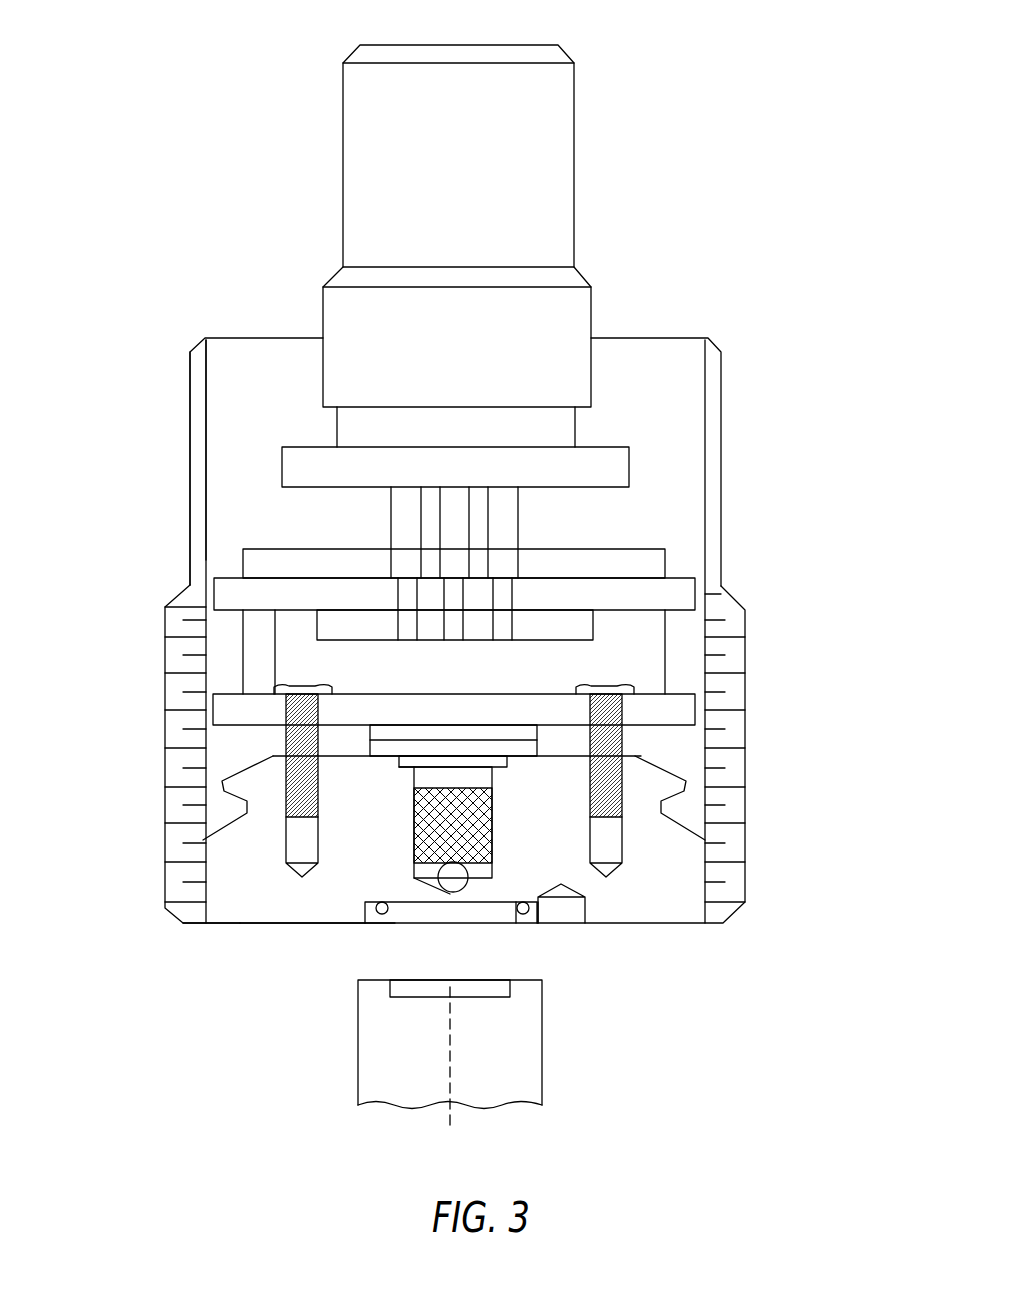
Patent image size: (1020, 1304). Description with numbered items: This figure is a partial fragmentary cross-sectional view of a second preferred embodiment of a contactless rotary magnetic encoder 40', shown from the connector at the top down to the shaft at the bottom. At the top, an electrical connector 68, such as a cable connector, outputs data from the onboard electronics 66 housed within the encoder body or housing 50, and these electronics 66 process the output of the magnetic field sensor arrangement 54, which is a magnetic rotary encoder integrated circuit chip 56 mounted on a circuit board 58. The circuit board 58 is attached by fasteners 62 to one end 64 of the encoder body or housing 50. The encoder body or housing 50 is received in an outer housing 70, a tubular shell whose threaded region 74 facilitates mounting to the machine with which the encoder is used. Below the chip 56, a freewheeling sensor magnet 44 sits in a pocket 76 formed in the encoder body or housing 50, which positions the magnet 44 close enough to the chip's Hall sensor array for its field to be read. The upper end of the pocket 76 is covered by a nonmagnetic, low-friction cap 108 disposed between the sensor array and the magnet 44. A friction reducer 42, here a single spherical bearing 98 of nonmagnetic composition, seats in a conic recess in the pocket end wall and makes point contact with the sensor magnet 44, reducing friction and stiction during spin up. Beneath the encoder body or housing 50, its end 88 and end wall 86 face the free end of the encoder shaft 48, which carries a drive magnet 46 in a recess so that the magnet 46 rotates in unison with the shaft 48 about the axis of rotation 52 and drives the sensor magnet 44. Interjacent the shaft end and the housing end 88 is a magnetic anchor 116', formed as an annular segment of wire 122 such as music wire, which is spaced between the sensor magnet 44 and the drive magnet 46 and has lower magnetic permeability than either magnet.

The rotary magnetic encoder 40' is at (144, 413).
The friction reducer 42 is at (469, 888).
The sensor magnet 44 is at (495, 825).
The drive magnet 46 is at (427, 980).
The encoder shaft 48 is at (348, 1068).
The encoder body or housing 50 is at (262, 930).
The axis of rotation 52 is at (450, 1056).
The magnetic field sensor arrangement 54 is at (432, 722).
The magnetic rotary encoder integrated circuit chip 56 is at (478, 738).
The circuit board 58 is at (230, 707).
The fasteners 62 is at (302, 688).
The end of encoder body or housing 64 is at (642, 756).
The electronics 66 is at (658, 520).
The electrical connector 68 is at (587, 111).
The outer housing 70 is at (727, 336).
The threaded region 74 is at (765, 608).
The pocket 76 is at (490, 775).
The end wall 86 is at (646, 926).
The end of encoder body or housing 88 is at (229, 930).
The spherical bearing 98 is at (495, 866).
The cap 108 is at (402, 770).
The magnetic anchor 116' is at (339, 957).
The annular segment of wire 122 is at (385, 920).